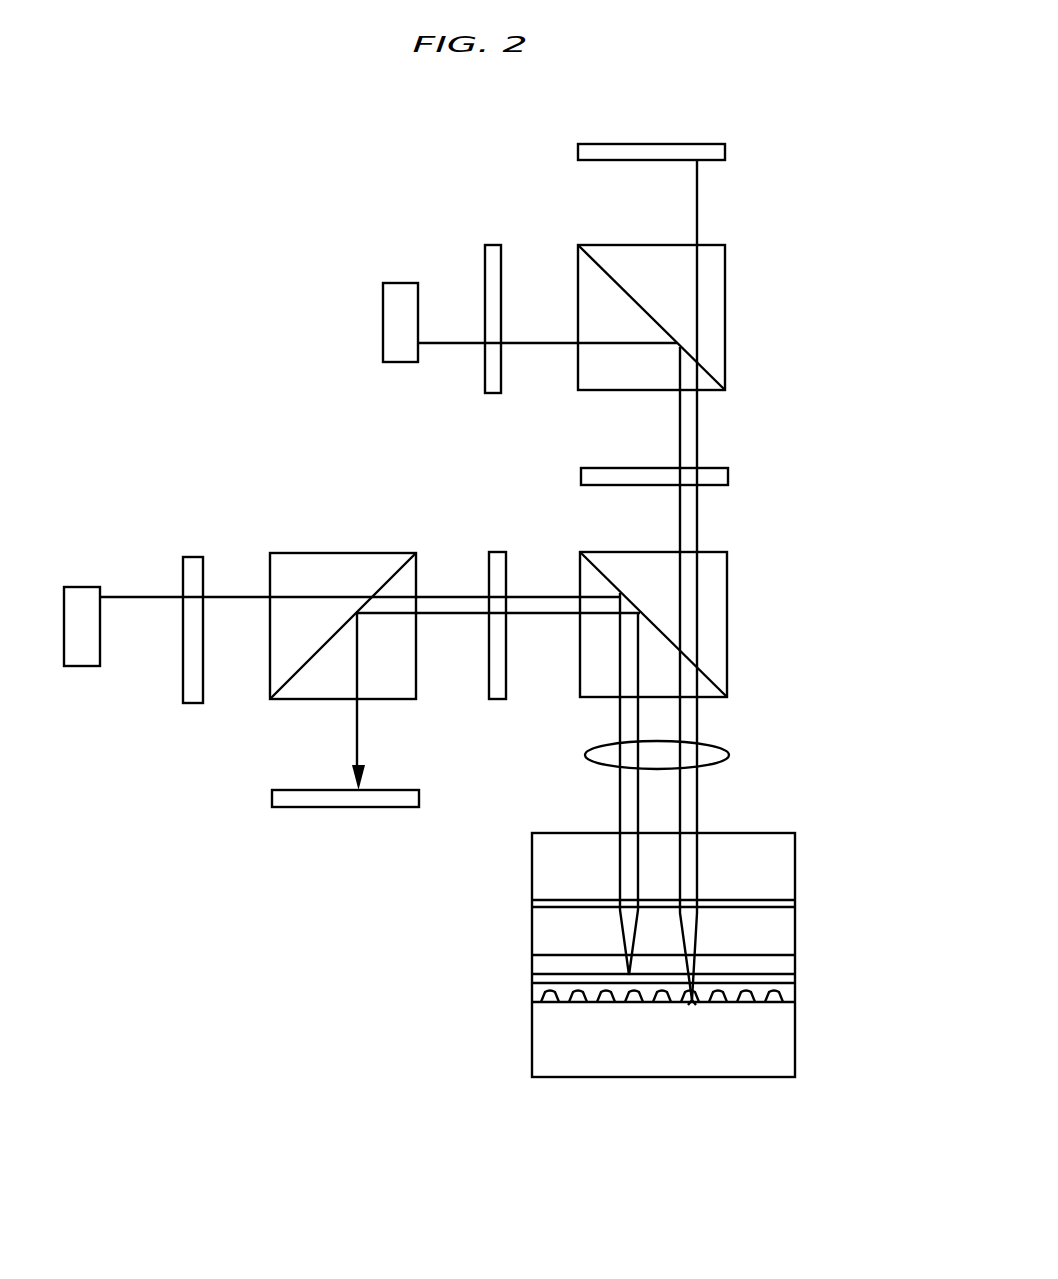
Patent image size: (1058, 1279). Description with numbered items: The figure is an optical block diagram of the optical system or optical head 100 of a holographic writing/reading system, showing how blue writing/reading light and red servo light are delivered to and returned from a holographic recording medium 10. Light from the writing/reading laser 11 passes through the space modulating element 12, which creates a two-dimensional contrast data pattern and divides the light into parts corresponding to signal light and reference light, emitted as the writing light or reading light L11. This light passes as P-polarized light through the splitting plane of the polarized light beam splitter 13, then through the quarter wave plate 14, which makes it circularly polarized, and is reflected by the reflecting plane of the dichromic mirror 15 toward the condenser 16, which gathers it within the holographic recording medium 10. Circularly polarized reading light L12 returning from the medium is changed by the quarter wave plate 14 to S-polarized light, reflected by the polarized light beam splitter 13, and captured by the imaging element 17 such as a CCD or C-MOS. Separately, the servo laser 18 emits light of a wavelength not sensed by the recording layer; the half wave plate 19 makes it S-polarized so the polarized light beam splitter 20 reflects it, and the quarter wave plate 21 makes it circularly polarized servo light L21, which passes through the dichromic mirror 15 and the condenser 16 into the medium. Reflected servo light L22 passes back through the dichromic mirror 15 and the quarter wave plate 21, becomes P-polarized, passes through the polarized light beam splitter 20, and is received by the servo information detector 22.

The holographic recording medium 10 is at (495, 934).
The writing/reading laser 11 is at (82, 587).
The space modulating element 12 is at (193, 557).
The polarized light beam splitter 13 is at (345, 553).
The ¼ wave plate 14 is at (497, 552).
The dichromic mirror 15 is at (727, 625).
The condenser 16 is at (729, 754).
The imaging element 17 is at (272, 800).
The servo laser 18 is at (399, 283).
The ½ wave plate 19 is at (493, 245).
The polarized light beam splitter 20 is at (725, 317).
The ¼ wave plate 21 is at (728, 476).
The servo information detector 22 is at (725, 152).
The optical system (optical head) 100 is at (830, 536).
The writing light / reading light L11 is at (619, 820).
The reading light L12 is at (619, 790).
The servo light L21 is at (700, 790).
The servo light L22 is at (700, 817).